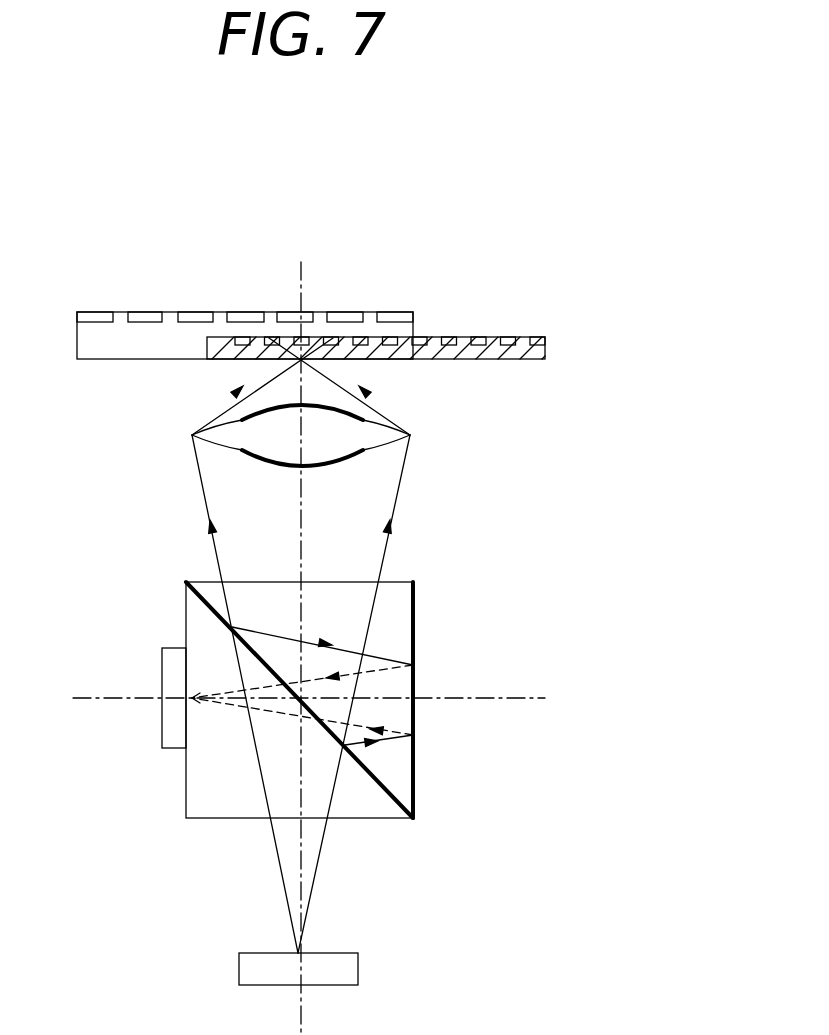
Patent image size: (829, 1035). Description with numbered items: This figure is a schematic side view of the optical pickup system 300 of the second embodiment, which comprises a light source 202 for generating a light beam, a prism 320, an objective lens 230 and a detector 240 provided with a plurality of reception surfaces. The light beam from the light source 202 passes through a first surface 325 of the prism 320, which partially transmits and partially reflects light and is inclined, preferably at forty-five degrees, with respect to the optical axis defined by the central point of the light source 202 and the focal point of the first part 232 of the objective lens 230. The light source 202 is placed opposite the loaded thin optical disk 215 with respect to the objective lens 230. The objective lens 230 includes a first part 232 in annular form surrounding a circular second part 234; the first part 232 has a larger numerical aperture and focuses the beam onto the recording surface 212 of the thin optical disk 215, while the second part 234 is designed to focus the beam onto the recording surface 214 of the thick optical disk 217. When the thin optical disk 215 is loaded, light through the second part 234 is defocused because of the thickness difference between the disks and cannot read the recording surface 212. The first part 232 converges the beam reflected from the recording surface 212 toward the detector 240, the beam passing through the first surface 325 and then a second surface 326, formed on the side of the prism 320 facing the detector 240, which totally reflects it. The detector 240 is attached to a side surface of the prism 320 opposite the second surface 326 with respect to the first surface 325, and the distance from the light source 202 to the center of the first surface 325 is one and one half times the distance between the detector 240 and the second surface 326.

The optical pickup system 300 is at (548, 160).
The light source 202 is at (340, 975).
The recording surface of the thin optical disk 212 is at (540, 340).
The recording surface of the thick optical disk 214 is at (143, 317).
The thin optical disk 215 is at (522, 355).
The thick optical disk 217 is at (130, 347).
The objective lens 230 is at (302, 464).
The first part of the objective lens 232 is at (378, 438).
The second part of the objective lens 234 is at (272, 443).
The detector 240 is at (172, 675).
The prism 320 is at (389, 724).
The first surface of the prism 325 is at (372, 780).
The second surface of the prism 326 is at (413, 762).